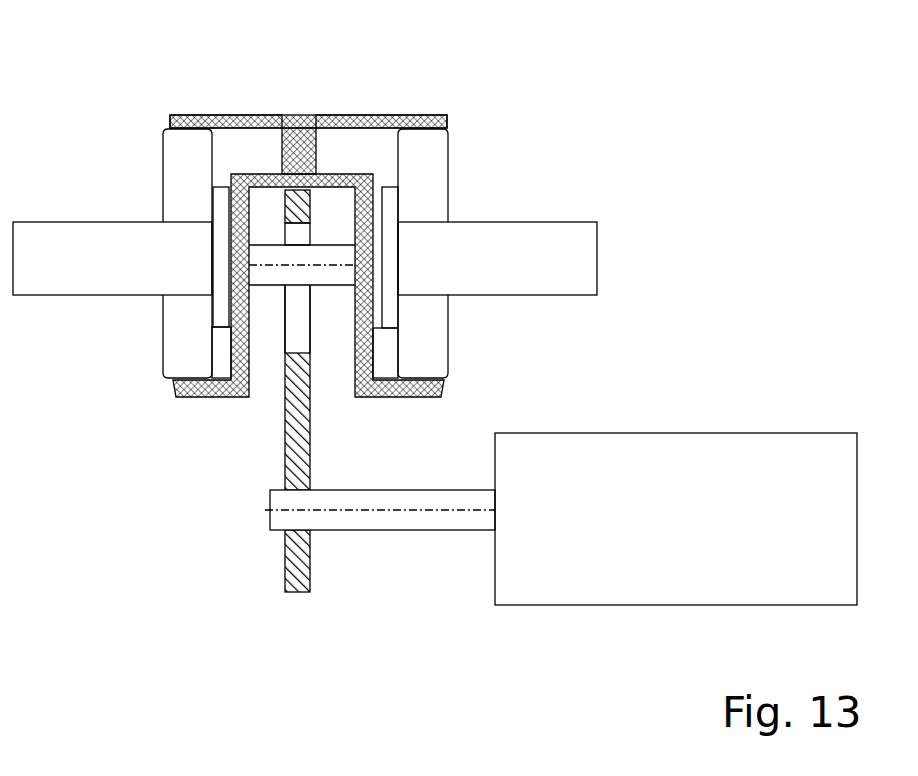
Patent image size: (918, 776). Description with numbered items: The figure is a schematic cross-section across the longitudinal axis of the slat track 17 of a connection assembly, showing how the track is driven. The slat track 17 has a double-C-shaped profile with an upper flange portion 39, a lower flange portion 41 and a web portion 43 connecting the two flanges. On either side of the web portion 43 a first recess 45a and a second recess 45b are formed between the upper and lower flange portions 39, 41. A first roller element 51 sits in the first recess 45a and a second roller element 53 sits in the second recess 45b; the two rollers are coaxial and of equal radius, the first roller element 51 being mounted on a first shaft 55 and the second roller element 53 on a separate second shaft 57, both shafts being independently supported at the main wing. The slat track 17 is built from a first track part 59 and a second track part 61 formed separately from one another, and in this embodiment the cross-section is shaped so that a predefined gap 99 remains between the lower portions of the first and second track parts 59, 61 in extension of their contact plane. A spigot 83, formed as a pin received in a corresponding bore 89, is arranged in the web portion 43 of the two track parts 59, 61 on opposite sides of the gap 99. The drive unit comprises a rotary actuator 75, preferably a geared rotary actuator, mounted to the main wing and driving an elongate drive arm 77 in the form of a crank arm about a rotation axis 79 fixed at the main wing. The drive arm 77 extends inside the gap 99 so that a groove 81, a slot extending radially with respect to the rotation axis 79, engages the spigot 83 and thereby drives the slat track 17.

The slat track 17 is at (205, 114).
The first track part 59 is at (209, 82).
The second track part 61 is at (393, 82).
The upper flange portion 39 is at (328, 114).
The web portion 43 is at (240, 174).
The lower flange portion 41 is at (193, 398).
The first recess 45a is at (223, 357).
The second recess 45b is at (387, 357).
The first roller element 51 is at (175, 183).
The second roller element 53 is at (428, 155).
The first shaft 55 is at (91, 274).
The second shaft 57 is at (526, 274).
The rotary actuator 75 is at (687, 526).
The drive arm 77 is at (297, 458).
The rotation axis 79 is at (265, 512).
The groove 81 is at (302, 337).
The spigot 83 is at (327, 258).
The bore 89 is at (357, 282).
The gap 99 is at (280, 329).